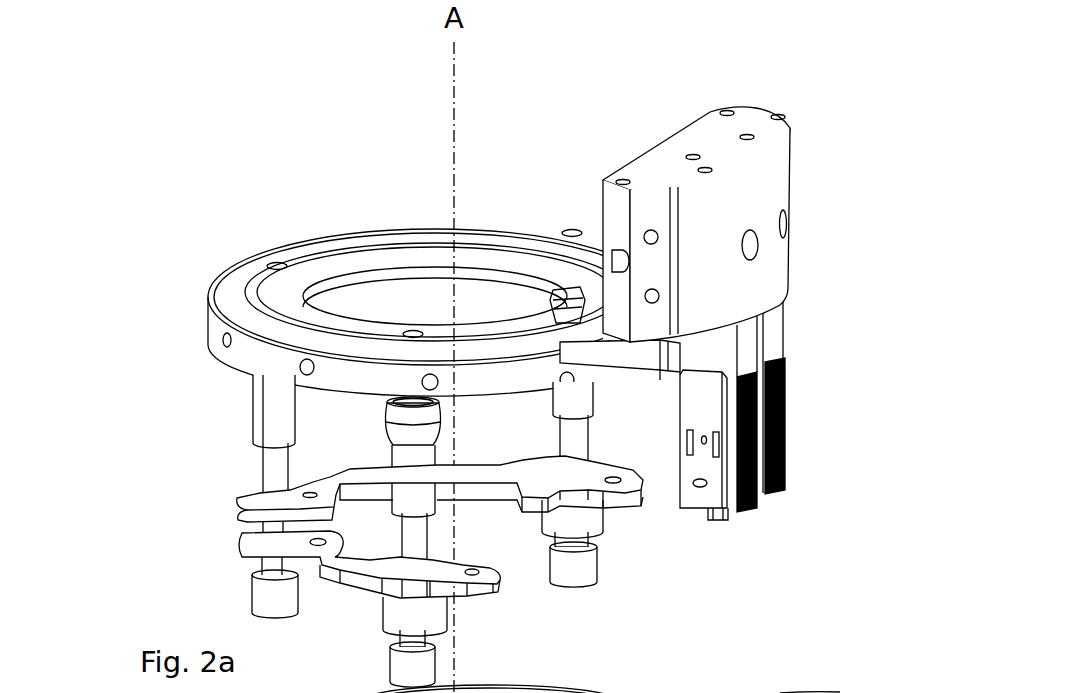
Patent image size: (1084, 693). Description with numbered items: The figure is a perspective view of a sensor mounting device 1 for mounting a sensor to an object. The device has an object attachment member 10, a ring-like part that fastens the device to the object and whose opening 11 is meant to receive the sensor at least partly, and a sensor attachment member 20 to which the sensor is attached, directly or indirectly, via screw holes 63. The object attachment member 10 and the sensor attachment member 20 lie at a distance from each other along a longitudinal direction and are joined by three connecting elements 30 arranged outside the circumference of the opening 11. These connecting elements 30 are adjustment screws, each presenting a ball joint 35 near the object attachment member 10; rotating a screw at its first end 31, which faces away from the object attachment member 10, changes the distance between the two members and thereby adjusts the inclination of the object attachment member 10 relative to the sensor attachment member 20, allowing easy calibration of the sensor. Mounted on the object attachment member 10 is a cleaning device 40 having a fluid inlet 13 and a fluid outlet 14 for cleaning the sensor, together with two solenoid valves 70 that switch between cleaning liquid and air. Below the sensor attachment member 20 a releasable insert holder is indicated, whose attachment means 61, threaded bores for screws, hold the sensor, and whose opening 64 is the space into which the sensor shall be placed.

The sensor mounting device 1 is at (239, 139).
The object attachment member 10 is at (218, 297).
The opening 11 is at (405, 297).
The fluid inlet 13 is at (760, 245).
The fluid outlet 14 is at (471, 252).
The sensor attachment member 20 is at (238, 508).
The connecting elements 30 is at (253, 430).
The first end 31 is at (258, 595).
The ball joint 35 is at (392, 412).
The cleaning device 40 is at (780, 192).
The attachment means 61 is at (543, 692).
The screw holes 63 is at (318, 543).
The opening 64 is at (840, 692).
The solenoid valves 70 is at (780, 317).